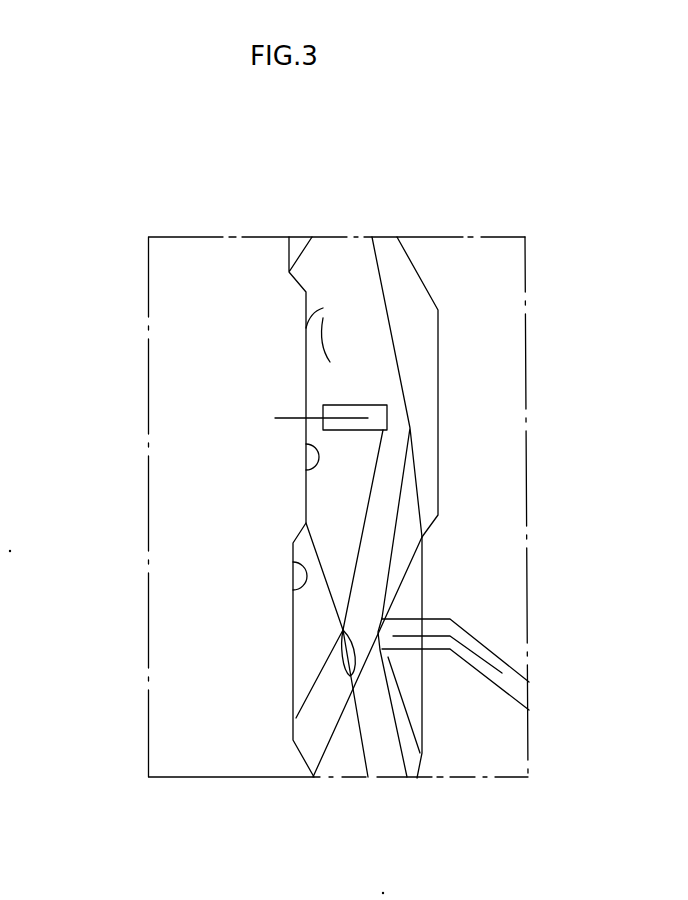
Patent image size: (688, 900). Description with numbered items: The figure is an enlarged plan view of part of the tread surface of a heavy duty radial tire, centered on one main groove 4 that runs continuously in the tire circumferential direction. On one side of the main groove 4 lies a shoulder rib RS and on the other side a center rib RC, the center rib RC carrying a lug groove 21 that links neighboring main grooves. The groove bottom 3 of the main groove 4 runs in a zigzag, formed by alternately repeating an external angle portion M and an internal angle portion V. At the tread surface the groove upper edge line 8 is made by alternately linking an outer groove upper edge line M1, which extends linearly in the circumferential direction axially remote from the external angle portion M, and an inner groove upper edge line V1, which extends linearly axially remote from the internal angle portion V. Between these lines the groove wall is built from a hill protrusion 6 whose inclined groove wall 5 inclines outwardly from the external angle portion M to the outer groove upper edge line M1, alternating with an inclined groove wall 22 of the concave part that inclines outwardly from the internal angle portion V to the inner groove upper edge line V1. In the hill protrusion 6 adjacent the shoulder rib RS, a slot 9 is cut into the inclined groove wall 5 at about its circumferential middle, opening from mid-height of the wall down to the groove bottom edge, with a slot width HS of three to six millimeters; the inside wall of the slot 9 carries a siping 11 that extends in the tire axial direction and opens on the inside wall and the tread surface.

The groove bottom 3 is at (378, 735).
The main groove 4 is at (366, 307).
The inclined groove wall 5 is at (314, 316).
The hill protrusion 6 is at (328, 481).
The groove upper edge line 8 is at (387, 421).
The slot 9 is at (343, 405).
The siping 11 is at (287, 420).
The lug groove 21 is at (510, 683).
The inclined groove wall 22 is at (300, 641).
The external angle portion M is at (372, 376).
The outer groove upper edge line M1 is at (348, 407).
The slot width HS is at (403, 425).
The shoulder rib RS is at (178, 459).
The center rib RC is at (487, 467).
The internal angle portion V is at (320, 778).
The inner groove upper edge line V1 is at (295, 597).